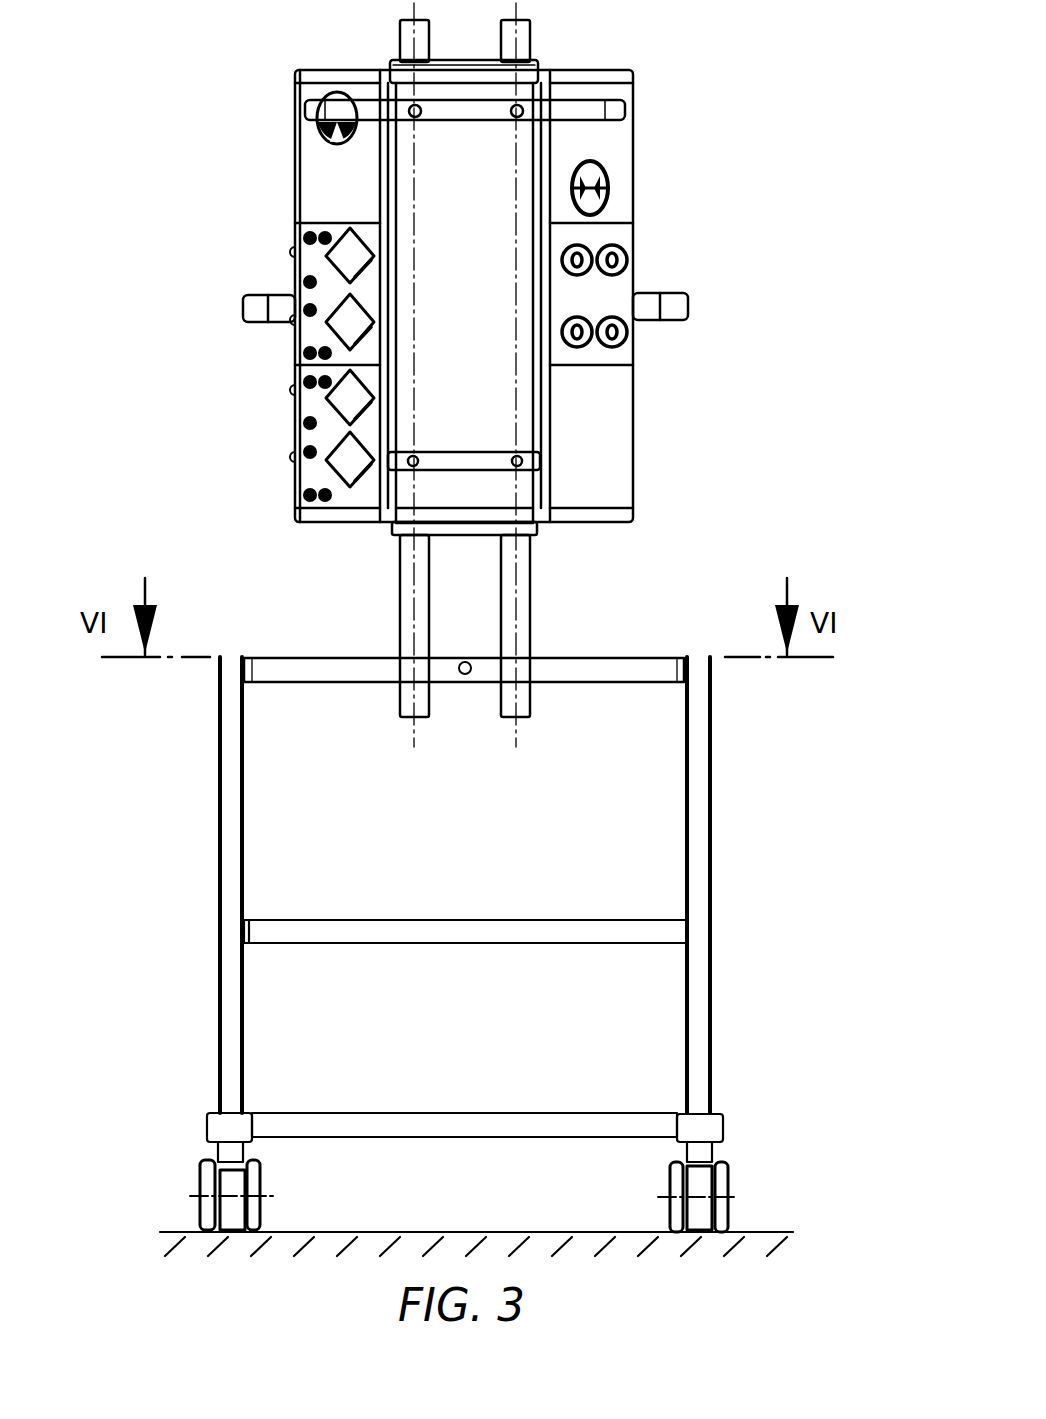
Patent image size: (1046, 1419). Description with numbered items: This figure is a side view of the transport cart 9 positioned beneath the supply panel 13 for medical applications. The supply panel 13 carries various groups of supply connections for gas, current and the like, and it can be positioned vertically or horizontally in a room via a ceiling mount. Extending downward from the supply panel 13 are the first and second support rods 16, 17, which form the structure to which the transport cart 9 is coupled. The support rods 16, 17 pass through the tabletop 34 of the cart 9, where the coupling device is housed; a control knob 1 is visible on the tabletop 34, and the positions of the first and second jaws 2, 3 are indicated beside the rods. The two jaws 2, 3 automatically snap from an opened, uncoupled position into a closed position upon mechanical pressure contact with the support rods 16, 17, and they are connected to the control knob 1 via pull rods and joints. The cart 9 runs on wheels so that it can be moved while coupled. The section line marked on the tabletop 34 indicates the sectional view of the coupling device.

The control knob 1 is at (465, 676).
The first jaw 2 is at (380, 692).
The second jaw 3 is at (546, 693).
The transport cart 9 is at (716, 843).
The supply panel 13 is at (603, 430).
The first support rod 16 is at (406, 585).
The second support rod 17 is at (525, 582).
The tabletop 34 is at (624, 645).